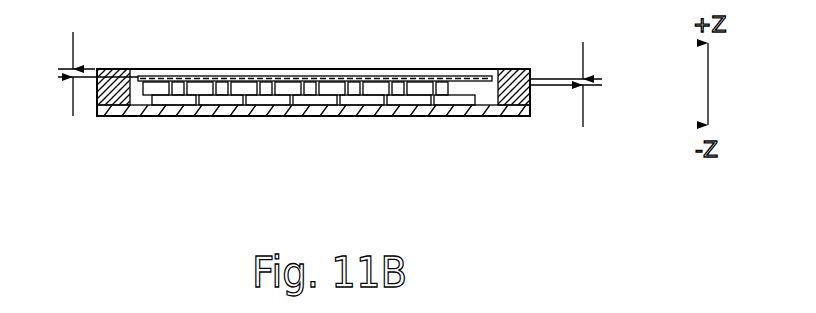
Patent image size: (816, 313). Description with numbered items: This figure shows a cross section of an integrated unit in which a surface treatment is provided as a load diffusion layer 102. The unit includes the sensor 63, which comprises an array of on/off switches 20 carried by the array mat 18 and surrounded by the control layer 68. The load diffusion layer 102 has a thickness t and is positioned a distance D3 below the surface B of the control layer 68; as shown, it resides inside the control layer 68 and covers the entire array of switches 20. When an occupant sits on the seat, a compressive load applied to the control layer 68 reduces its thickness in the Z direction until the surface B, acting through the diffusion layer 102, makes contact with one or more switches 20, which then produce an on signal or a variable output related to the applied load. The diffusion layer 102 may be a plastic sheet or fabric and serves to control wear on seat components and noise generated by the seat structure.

The on/off switches 20 is at (222, 80).
The load diffusion layer 102 is at (288, 80).
The sensor 63 is at (338, 92).
The B surface B is at (436, 71).
The control layer 68 is at (121, 106).
The array mat 18 is at (462, 116).
The distance D3 is at (97, 60).
The thickness t is at (566, 72).